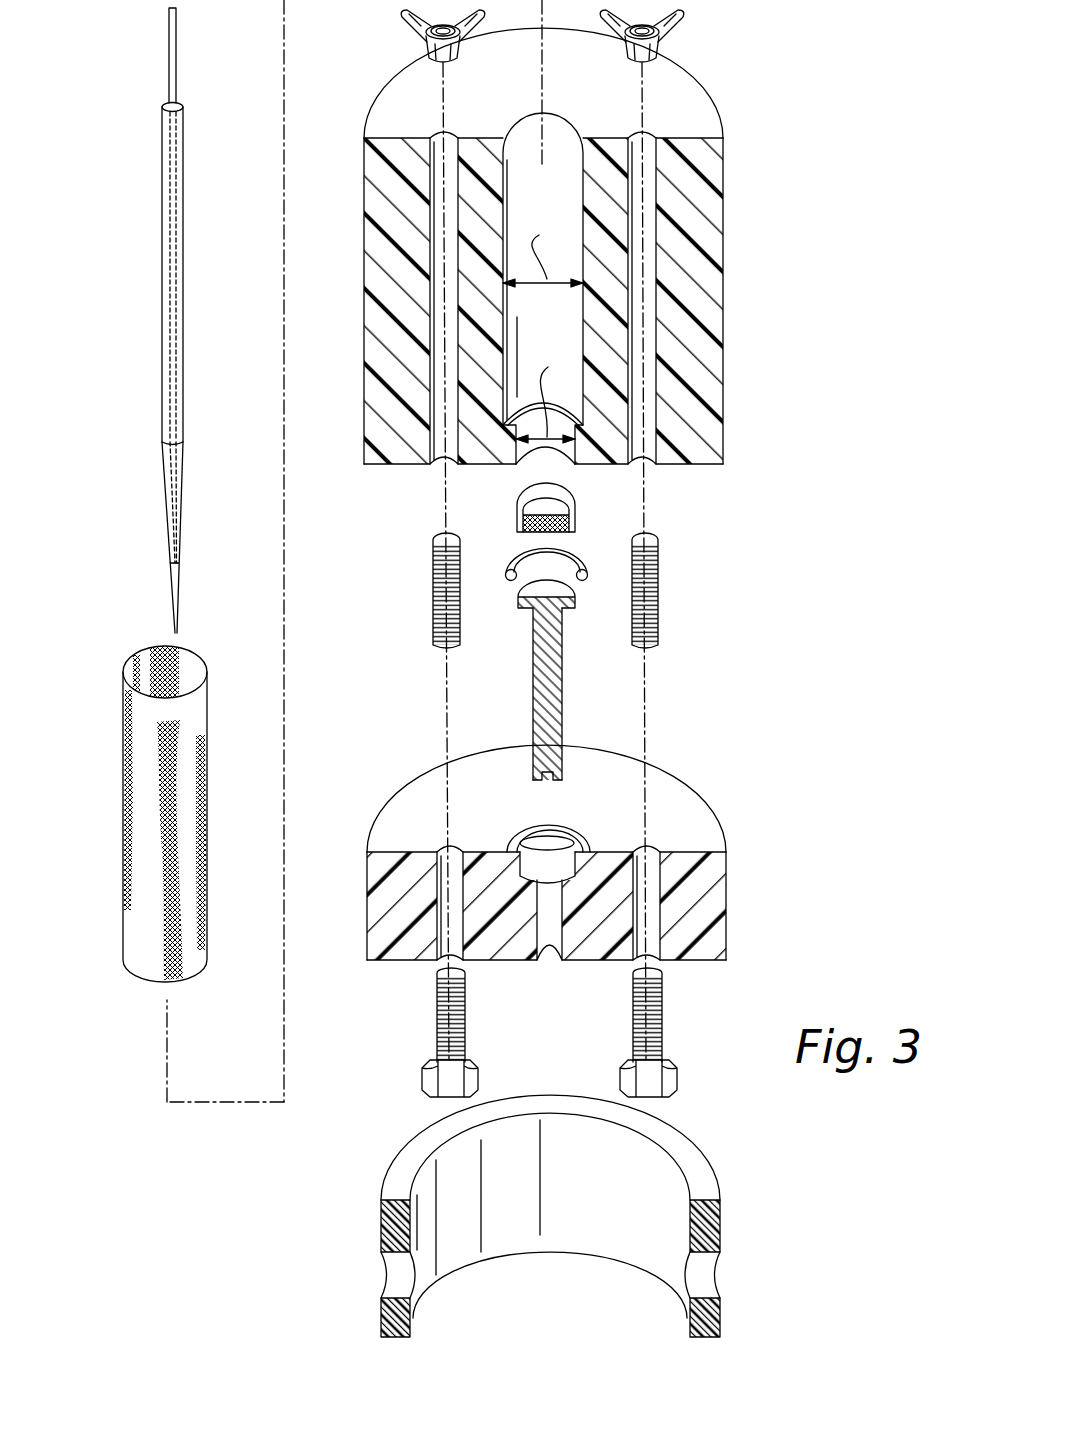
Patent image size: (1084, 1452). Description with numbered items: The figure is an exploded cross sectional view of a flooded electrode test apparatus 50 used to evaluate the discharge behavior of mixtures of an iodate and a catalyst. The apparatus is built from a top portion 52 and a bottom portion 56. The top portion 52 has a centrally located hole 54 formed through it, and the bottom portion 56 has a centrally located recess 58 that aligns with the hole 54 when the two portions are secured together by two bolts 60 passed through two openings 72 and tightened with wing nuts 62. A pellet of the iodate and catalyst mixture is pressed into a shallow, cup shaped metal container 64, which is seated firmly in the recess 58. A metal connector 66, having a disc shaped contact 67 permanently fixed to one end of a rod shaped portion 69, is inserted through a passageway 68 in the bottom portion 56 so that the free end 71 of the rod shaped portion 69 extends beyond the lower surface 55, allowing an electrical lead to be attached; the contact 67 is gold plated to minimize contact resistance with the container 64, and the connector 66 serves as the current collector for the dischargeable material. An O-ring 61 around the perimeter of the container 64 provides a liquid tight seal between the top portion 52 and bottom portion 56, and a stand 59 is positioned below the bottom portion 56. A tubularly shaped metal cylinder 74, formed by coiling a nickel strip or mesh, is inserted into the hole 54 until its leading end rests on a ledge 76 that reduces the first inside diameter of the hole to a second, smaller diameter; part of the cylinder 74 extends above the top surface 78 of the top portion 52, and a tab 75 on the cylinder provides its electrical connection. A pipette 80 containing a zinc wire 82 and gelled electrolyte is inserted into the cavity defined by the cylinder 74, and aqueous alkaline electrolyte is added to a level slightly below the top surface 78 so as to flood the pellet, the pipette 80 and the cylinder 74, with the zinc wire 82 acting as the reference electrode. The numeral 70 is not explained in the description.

The test apparatus 50 is at (812, 98).
The top portion 52 is at (575, 246).
The centrally located hole 54 is at (655, 288).
The lower surface 55 is at (706, 962).
The bottom portion 56 is at (597, 885).
The centrally located recess 58 is at (556, 825).
The stand 59 is at (702, 1180).
The bolts 60 is at (433, 565).
The O-ring 61 is at (583, 558).
The wing nuts 62 is at (422, 50).
The cup shaped metal container 64 is at (517, 522).
The metal connector 66 is at (542, 699).
The disc shaped contact 67 is at (518, 604).
The passageway 68 is at (548, 965).
The rod shaped portion 69 is at (533, 695).
The lower face of lower block 70 is at (400, 962).
The free end 71 is at (538, 770).
The openings 72 is at (457, 250).
The tubularly shaped metal cylinder 74 is at (150, 793).
The tab 75 is at (139, 770).
The ledge 76 is at (577, 412).
The top surface 78 is at (418, 112).
The pipette 80 is at (162, 290).
The zinc wire 82 is at (170, 45).